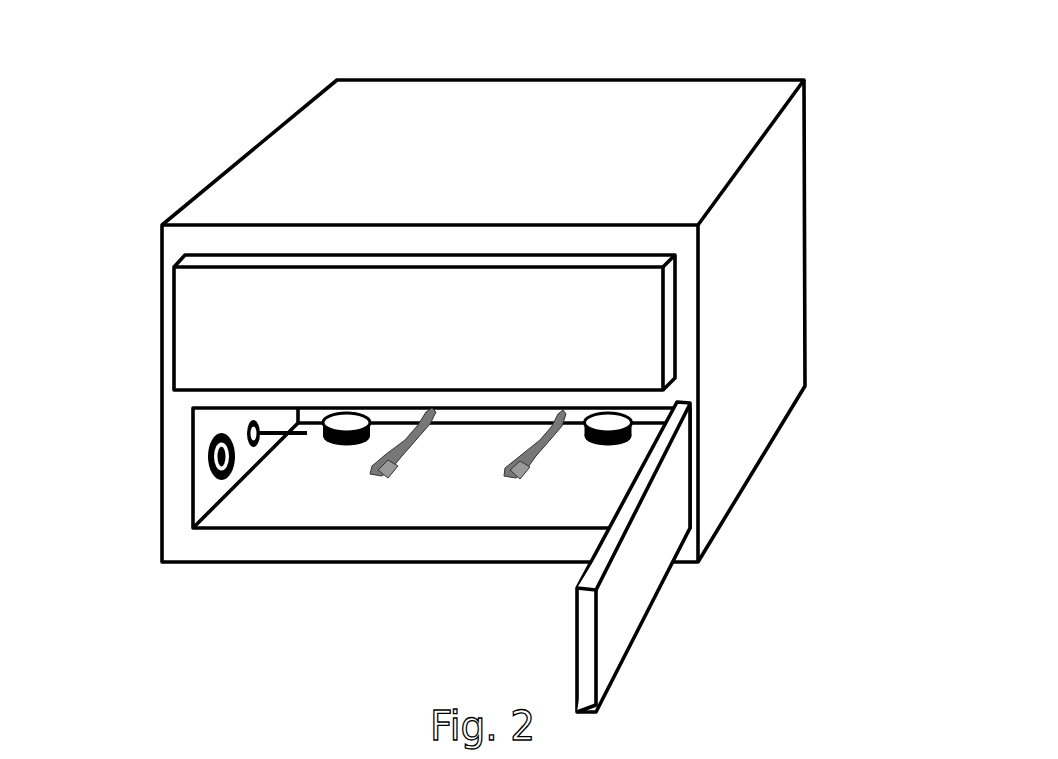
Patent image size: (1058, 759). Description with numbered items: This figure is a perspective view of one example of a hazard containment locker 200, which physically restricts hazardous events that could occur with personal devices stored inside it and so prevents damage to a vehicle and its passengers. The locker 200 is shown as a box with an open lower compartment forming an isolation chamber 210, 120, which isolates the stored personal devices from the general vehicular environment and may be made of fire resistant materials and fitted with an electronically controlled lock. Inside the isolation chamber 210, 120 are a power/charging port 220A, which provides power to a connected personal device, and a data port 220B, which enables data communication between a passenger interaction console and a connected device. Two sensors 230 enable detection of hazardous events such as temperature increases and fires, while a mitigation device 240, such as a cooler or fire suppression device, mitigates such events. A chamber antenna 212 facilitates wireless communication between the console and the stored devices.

The hazard containment locker 200 is at (96, 65).
The isolation chamber 210 is at (188, 414).
The isolation chamber 120 is at (400, 552).
The chamber antenna 212 is at (285, 437).
The sensor 230 is at (340, 446).
The mitigation device 240 is at (220, 480).
The power/charging port 220A is at (400, 470).
The data port 220B is at (538, 470).